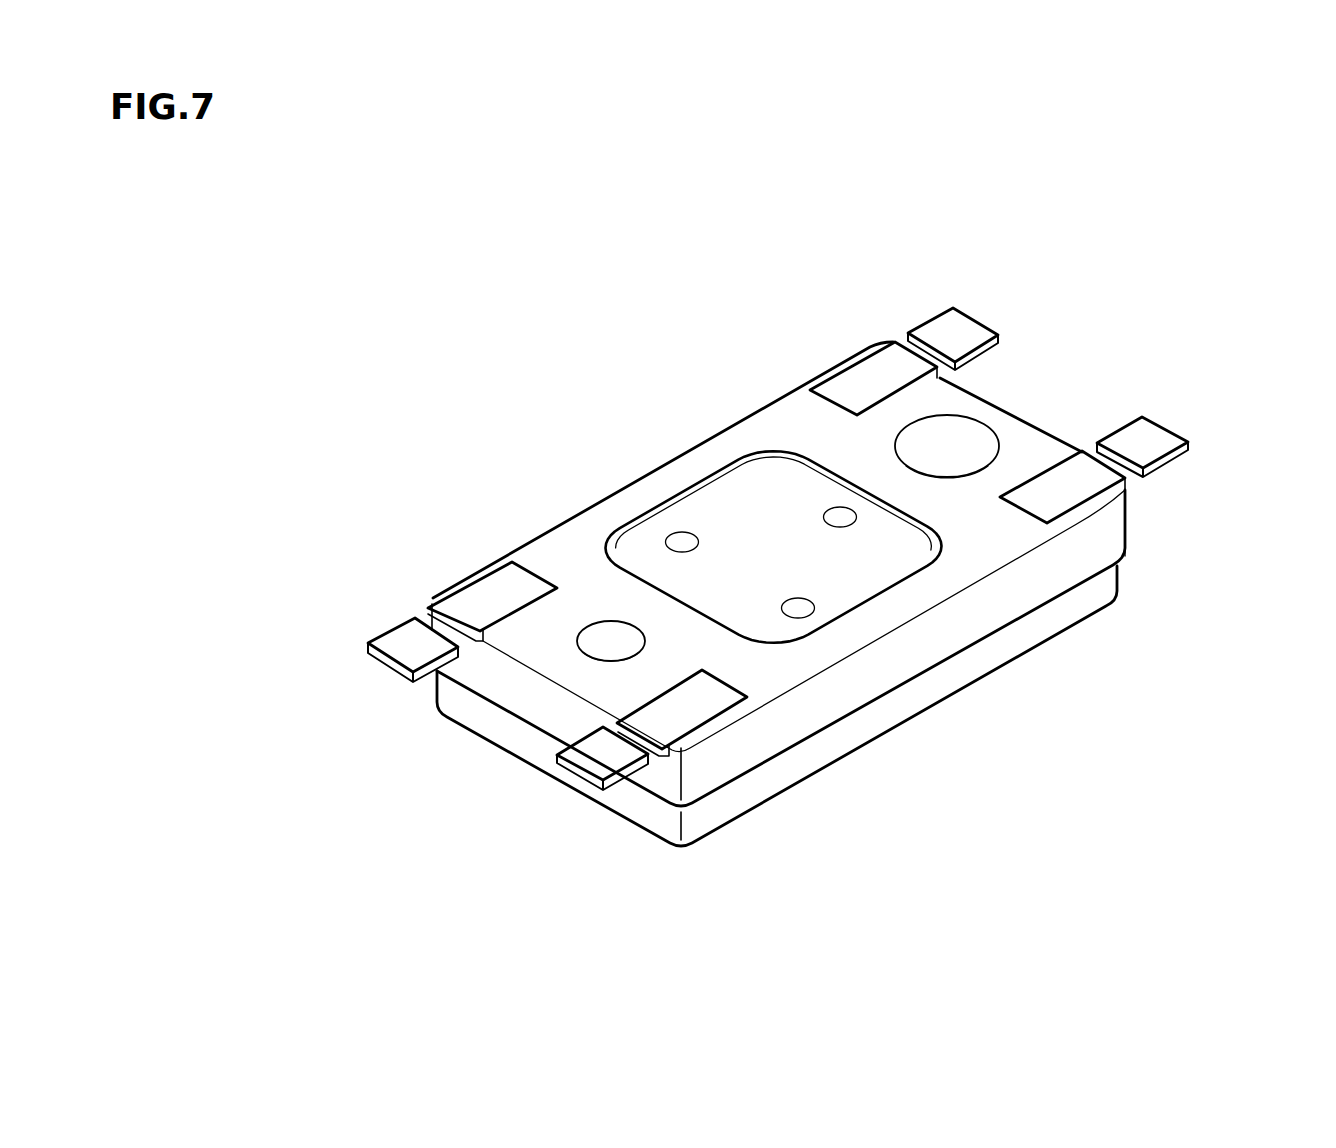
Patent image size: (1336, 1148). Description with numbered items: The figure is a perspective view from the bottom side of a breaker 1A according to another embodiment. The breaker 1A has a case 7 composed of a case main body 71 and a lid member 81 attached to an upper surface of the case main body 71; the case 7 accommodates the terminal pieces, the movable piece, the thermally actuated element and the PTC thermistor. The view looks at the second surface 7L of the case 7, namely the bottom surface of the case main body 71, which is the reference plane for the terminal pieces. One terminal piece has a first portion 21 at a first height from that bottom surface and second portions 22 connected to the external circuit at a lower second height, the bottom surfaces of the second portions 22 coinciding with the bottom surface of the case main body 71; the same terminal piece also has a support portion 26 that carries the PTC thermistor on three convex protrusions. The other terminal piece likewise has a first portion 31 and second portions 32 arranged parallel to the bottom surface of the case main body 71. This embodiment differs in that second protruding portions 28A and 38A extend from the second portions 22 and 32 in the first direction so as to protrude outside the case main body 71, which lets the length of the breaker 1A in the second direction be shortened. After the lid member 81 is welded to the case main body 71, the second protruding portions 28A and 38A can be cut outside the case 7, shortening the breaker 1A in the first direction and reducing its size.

The breaker 1A is at (1254, 272).
The case 7 is at (975, 615).
The second surface of the case 7L is at (990, 525).
The case main body 71 is at (757, 437).
The lid member 81 is at (745, 798).
The first portion 21 is at (610, 660).
The second portions 22 is at (502, 600).
The support portion 26 is at (720, 510).
The second protruding portions 28A is at (437, 620).
The first portion 31 is at (947, 473).
The second portions 32 is at (863, 383).
The second protruding portions 38A is at (950, 330).